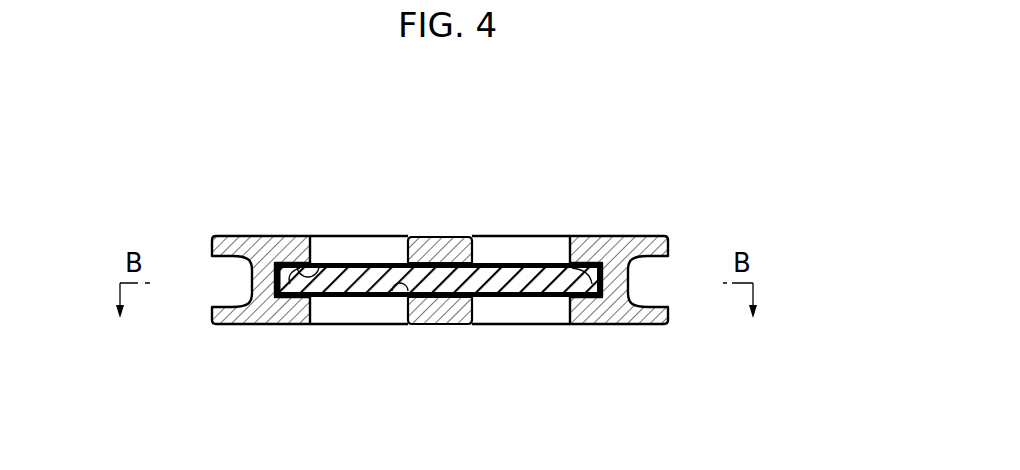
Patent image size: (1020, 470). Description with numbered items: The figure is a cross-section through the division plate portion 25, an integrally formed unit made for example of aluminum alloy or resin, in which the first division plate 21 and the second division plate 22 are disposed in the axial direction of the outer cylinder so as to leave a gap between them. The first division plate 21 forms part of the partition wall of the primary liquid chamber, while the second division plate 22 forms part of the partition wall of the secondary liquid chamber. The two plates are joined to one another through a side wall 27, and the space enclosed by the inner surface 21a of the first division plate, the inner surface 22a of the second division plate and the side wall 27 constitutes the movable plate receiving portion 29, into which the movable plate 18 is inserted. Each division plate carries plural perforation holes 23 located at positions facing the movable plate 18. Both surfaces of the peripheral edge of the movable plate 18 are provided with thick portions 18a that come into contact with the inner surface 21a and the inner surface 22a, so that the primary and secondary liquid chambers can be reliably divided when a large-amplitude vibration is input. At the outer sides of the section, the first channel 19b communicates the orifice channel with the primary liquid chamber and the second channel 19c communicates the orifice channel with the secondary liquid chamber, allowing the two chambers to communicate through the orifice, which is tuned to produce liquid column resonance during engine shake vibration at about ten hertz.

The movable plate 18 is at (453, 282).
The thick portions 18a is at (594, 262).
The first channel 19b is at (236, 283).
The second channel 19c is at (646, 283).
The first division plate 21 is at (607, 246).
The inner surface of the first division plate 21a is at (316, 262).
The second division plate 22 is at (583, 312).
The inner surface of the second division plate 22a is at (398, 276).
The perforation holes 23 is at (408, 246).
The division plate portion 25 is at (652, 229).
The side wall 27 is at (271, 288).
The movable plate receiving portion 29 is at (280, 288).